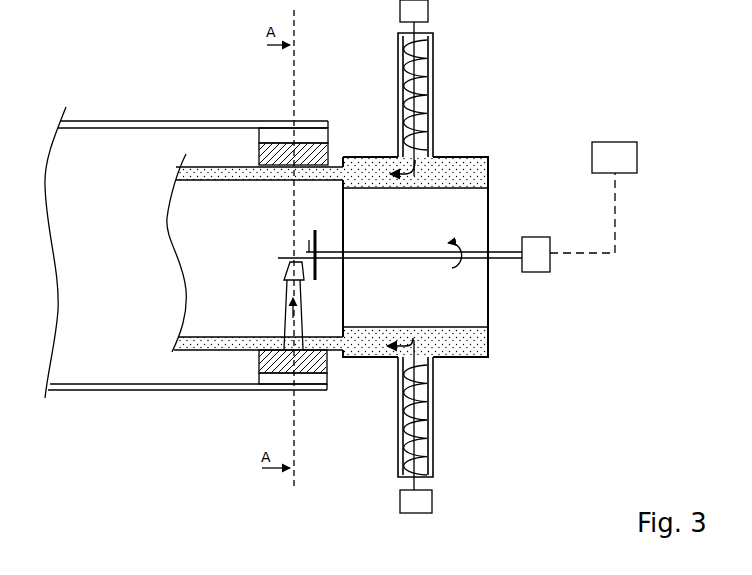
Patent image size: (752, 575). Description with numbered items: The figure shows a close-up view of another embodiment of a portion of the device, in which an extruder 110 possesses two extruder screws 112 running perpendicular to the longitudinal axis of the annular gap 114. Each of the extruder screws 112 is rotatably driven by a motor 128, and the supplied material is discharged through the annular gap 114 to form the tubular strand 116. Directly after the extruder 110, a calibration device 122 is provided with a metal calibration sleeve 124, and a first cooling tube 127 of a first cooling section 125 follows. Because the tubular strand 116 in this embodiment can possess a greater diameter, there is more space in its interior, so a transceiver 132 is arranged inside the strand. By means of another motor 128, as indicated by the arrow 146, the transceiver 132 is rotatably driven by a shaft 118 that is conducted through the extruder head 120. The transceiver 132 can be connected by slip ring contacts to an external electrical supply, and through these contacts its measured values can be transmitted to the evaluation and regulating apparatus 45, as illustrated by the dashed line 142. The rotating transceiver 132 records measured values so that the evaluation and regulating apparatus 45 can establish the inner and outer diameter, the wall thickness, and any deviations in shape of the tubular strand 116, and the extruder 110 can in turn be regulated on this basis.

The first cooling section 125 is at (117, 98).
The first cooling tube 127 is at (96, 390).
The tubular strand 116 is at (232, 175).
The annular gap 114 is at (340, 343).
The calibration device 122 is at (308, 135).
The metal calibration sleeve 124 is at (325, 365).
The extruder 110 is at (481, 139).
The extruder head 120 is at (353, 165).
The extruder screws 112 is at (417, 63).
The motor 128 is at (428, 8).
The shaft 118 is at (395, 262).
The arrow 146 is at (455, 270).
The transceiver 132 is at (289, 262).
The dashed line 142 is at (593, 255).
The evaluation and regulating apparatus 45 is at (626, 168).